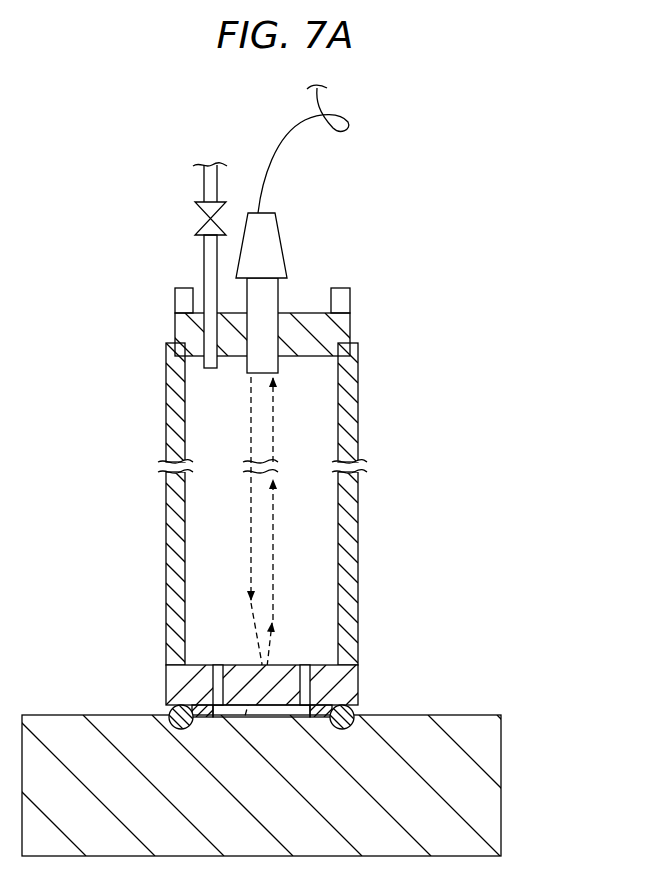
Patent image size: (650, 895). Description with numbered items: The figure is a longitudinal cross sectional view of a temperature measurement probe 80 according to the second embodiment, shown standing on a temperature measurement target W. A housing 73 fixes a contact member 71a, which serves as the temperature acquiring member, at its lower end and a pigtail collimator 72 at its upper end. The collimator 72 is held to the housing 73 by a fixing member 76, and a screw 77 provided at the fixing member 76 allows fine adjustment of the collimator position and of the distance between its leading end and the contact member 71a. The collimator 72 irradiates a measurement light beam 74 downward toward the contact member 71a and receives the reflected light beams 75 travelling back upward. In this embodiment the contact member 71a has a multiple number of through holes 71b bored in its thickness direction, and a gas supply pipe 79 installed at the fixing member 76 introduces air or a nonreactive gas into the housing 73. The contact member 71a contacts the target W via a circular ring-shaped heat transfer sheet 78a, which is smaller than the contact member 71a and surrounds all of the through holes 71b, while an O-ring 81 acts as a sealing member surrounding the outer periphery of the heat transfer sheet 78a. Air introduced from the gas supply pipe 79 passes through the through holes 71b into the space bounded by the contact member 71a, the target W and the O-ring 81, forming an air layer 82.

The temperature measurement probe 80 is at (296, 410).
The pigtail collimator 72 is at (277, 247).
The housing 73 is at (354, 528).
The measurement light beam 74 is at (250, 510).
The reflected light beams 75 is at (273, 545).
The fixing member 76 is at (347, 330).
The screw 77 is at (343, 302).
The heat transfer sheet 78a is at (322, 710).
The gas supply pipe 79 is at (203, 256).
The O-ring 81 is at (356, 714).
The air layer 82 is at (243, 710).
The contact member 71a is at (168, 682).
The through holes 71b is at (305, 664).
The temperature measurement target W is at (502, 776).